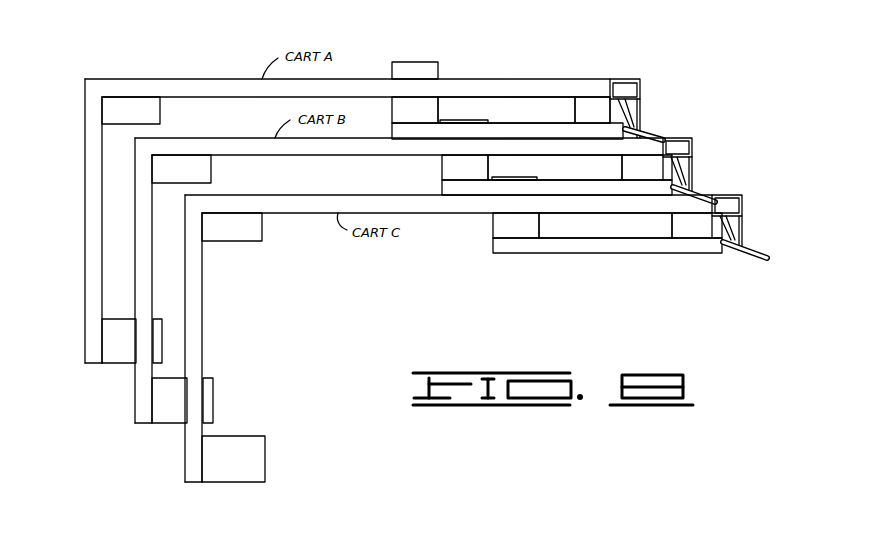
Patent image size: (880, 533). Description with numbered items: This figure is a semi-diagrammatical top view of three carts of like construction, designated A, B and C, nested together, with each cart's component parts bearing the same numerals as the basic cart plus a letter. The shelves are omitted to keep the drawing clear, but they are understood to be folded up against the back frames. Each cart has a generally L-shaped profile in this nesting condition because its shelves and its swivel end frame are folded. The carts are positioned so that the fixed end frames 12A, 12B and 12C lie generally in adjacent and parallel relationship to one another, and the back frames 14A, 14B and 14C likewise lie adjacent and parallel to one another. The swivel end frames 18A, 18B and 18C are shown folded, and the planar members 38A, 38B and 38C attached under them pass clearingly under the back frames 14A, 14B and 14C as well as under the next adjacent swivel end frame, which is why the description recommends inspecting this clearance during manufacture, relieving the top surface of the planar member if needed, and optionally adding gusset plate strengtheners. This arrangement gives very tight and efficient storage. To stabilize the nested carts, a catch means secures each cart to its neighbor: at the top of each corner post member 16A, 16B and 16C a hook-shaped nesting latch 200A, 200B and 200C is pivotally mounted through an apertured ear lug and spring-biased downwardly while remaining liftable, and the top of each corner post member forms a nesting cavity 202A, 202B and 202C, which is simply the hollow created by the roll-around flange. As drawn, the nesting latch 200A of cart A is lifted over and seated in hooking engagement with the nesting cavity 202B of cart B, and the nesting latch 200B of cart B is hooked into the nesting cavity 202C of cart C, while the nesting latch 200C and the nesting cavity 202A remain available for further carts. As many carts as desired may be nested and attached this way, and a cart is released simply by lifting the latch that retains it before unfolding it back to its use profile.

The fixed end frame 12A is at (83, 166).
The fixed end frame 12B is at (134, 222).
The fixed end frame 12C is at (184, 288).
The back frame 14A is at (216, 77).
The back frame 14B is at (247, 137).
The back frame 14C is at (307, 190).
The corner post member 16A is at (652, 89).
The corner post member 16B is at (705, 155).
The corner post member 16C is at (756, 214).
The swivel end frame 18A is at (503, 130).
The swivel end frame 18B is at (573, 168).
The swivel end frame 18C is at (570, 245).
The planar member 38A is at (152, 119).
The planar member 38B is at (200, 178).
The planar member 38C is at (250, 234).
The nesting latch 200A is at (645, 124).
The nesting latch 200B is at (697, 192).
The nesting latch 200C is at (757, 255).
The nesting cavity 202A is at (630, 87).
The nesting cavity 202B is at (680, 147).
The nesting cavity 202C is at (733, 204).